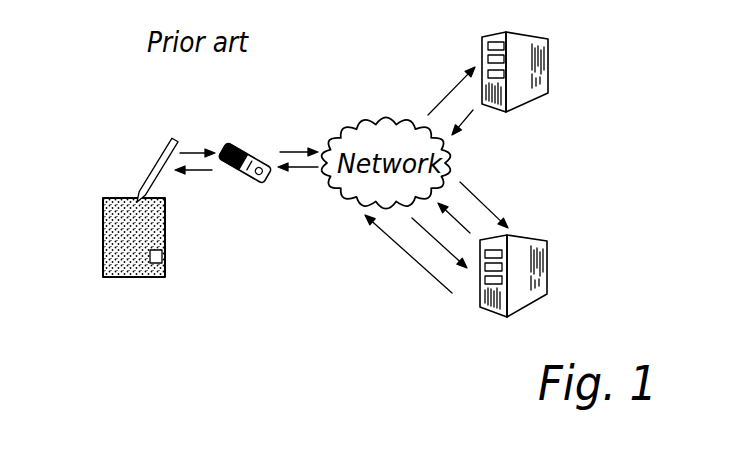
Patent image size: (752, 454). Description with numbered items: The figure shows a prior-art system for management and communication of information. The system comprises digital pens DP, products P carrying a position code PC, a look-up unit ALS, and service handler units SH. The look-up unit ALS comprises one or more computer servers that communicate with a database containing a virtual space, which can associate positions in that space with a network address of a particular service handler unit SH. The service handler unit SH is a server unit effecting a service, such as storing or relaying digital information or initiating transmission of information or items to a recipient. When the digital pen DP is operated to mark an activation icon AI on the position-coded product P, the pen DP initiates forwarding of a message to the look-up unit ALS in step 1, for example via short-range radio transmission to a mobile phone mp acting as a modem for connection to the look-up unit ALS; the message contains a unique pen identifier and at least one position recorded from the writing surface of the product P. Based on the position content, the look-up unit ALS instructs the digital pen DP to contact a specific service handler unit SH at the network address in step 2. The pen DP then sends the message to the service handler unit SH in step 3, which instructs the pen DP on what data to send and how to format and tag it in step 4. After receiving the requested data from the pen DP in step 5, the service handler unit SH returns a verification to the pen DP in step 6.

The step of forwarding a message to the look-up unit 1 is at (451, 91).
The step of instructing the pen to contact a service handler unit 2 is at (462, 114).
The step of sending the message to the service handler unit 3 is at (484, 200).
The step of instructing the pen on data to send 4 is at (456, 215).
The step of receiving the requested data from the pen 5 is at (439, 243).
The step of returning a verification 6 is at (408, 254).
The product P is at (112, 198).
The digital pen DP is at (169, 148).
The position code PC is at (121, 258).
The activation icon AI is at (162, 257).
The mobile phone mp is at (254, 152).
The look-up unit ALS is at (533, 90).
The service handler unit SH is at (533, 293).